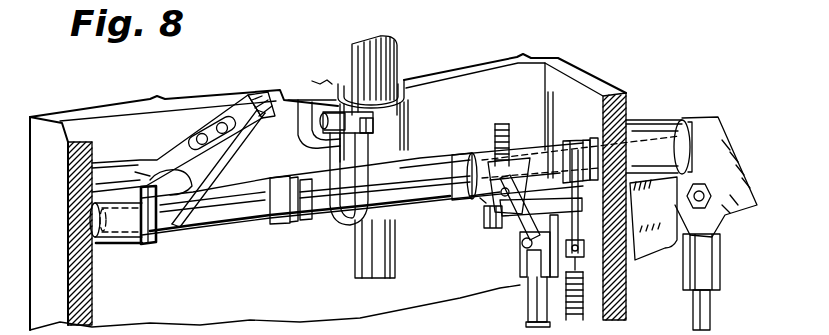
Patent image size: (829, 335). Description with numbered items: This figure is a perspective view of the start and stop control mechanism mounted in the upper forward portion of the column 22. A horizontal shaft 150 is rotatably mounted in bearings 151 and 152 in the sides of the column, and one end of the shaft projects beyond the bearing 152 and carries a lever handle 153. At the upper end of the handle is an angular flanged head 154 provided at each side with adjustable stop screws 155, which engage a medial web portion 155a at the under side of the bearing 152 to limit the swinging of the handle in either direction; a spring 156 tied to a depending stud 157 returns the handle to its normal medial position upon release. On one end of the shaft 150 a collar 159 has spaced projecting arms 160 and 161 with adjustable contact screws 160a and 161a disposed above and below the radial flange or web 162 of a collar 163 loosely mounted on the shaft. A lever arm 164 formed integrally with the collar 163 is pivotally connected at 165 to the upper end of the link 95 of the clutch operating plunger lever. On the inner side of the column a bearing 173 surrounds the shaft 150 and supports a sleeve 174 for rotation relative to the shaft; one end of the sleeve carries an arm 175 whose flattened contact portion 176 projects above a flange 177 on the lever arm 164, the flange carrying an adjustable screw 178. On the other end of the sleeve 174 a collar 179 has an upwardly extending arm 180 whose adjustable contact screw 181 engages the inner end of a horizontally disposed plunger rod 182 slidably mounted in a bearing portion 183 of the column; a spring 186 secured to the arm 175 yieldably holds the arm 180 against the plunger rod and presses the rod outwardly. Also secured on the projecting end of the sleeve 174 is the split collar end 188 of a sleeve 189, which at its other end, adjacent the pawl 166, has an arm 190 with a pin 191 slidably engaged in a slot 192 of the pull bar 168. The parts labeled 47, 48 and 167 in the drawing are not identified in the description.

The column 22 is at (78, 307).
The lower shaft section 47 is at (370, 258).
The housing boss 48 is at (412, 98).
The link 95 is at (550, 318).
The horizontal shaft 150 is at (263, 177).
The bearing 151 is at (117, 247).
The bearing 152 is at (642, 138).
The lever handle 153 is at (702, 302).
The angular flanged head 154 is at (730, 165).
The adjustable stop screws 155 is at (682, 235).
The medial web portion 155a is at (636, 250).
The spring 156 is at (583, 318).
The depending stud 157 is at (583, 196).
The collar 159 is at (546, 142).
The projecting arm 160 is at (566, 140).
The adjustable contact screw 160a is at (590, 140).
The projecting arm 161 is at (576, 258).
The adjustable contact screw 161a is at (578, 248).
The radial flange 162 is at (579, 214).
The collar 163 is at (487, 155).
The lever arm 164 is at (517, 230).
The pivotal connection 165 is at (522, 283).
The pawl 166 is at (150, 213).
The arm 167 is at (148, 165).
The pull bar 168 is at (245, 108).
The bearing 173 is at (415, 158).
The sleeve 174 is at (460, 152).
The arm 175 is at (473, 193).
The flattened contact portion 176 is at (483, 197).
The flange 177 is at (485, 200).
The adjustable screw 178 is at (490, 229).
The collar 179 is at (350, 225).
The upwardly extending arm 180 is at (368, 146).
The adjustable contact screw 181 is at (336, 108).
The plunger rod 182 is at (318, 88).
The bearing portion 183 is at (318, 130).
The spring 186 is at (505, 124).
The split collar end 188 is at (302, 215).
The sleeve 189 is at (244, 214).
The arm 190 is at (200, 175).
The pin 191 is at (200, 130).
The slot 192 is at (205, 128).